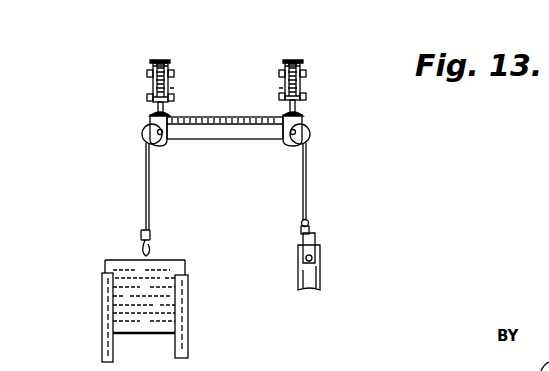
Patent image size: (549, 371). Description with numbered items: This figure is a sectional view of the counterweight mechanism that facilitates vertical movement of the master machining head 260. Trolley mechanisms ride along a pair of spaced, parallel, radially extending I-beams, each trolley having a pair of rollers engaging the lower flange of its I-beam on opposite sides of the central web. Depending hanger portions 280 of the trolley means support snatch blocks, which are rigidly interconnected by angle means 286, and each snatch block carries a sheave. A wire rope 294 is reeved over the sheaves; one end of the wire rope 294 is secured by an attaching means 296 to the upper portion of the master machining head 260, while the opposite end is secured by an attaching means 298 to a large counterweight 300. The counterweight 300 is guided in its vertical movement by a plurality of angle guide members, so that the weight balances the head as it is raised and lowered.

The master machining head 260 is at (325, 265).
The hanger portion 280 is at (279, 88).
The angle means 286 is at (217, 131).
The wire rope 294 is at (150, 193).
The attaching means 296 is at (310, 226).
The attaching means 298 is at (156, 239).
The counterweight 300 is at (188, 270).